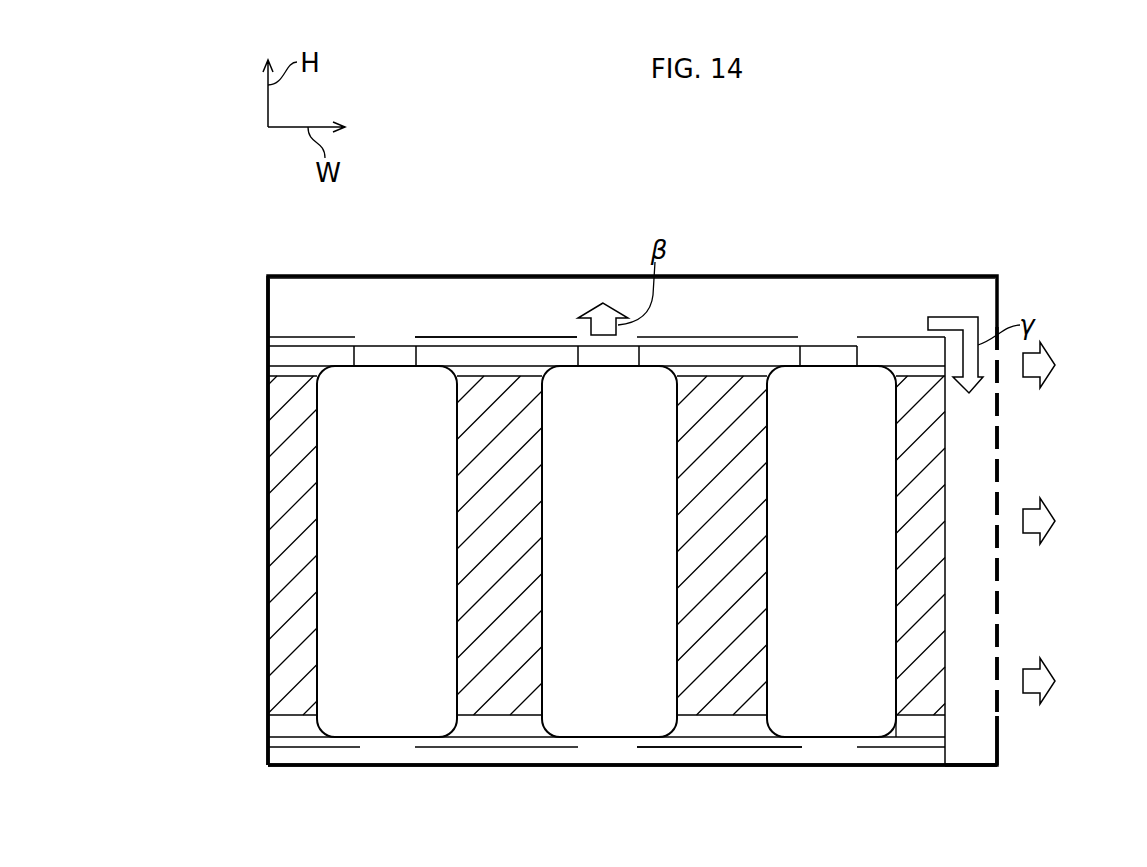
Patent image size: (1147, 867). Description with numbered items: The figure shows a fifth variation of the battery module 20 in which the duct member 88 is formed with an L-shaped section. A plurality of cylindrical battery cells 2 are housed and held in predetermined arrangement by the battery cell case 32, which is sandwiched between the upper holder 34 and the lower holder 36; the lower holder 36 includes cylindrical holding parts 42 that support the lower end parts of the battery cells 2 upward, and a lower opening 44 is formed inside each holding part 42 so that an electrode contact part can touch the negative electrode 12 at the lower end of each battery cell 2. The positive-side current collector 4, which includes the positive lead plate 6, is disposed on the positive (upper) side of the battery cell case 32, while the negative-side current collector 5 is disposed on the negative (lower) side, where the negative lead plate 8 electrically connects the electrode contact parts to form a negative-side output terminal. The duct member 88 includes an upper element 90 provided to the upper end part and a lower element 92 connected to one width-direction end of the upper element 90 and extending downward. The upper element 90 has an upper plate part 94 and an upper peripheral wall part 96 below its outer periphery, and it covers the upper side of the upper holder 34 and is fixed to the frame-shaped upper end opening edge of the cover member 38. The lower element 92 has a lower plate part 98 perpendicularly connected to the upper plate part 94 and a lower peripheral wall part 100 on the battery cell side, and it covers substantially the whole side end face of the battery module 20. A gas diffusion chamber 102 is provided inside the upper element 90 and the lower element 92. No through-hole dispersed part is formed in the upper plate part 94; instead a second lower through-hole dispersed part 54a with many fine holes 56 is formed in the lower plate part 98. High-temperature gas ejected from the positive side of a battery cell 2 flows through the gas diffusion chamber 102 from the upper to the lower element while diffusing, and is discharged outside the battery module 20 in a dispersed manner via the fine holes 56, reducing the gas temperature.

The battery cell 2 is at (345, 540).
The positive-side current collector 4 is at (519, 335).
The negative-side current collector 5 is at (743, 747).
The positive lead plate 6 is at (303, 336).
The negative lead plate 8 is at (524, 747).
The negative electrode 12 is at (375, 737).
The battery module 20 is at (934, 166).
The battery cell case 32 is at (925, 625).
The upper holder 34 is at (478, 345).
The lower holder 36 is at (925, 726).
The cover member 38 is at (860, 765).
The holding part 42 is at (300, 727).
The lower opening 44 is at (403, 747).
The second lower through-hole dispersed part 54a is at (1064, 519).
The fine hole 56 is at (996, 418).
The duct member 88 is at (953, 461).
The upper element 90 is at (928, 277).
The lower element 92 is at (998, 293).
The upper plate part 94 is at (605, 276).
The upper peripheral wall part 96 is at (268, 292).
The lower plate part 98 is at (997, 728).
The lower peripheral wall part 100 is at (980, 765).
The gas diffusion chamber 102 is at (745, 298).